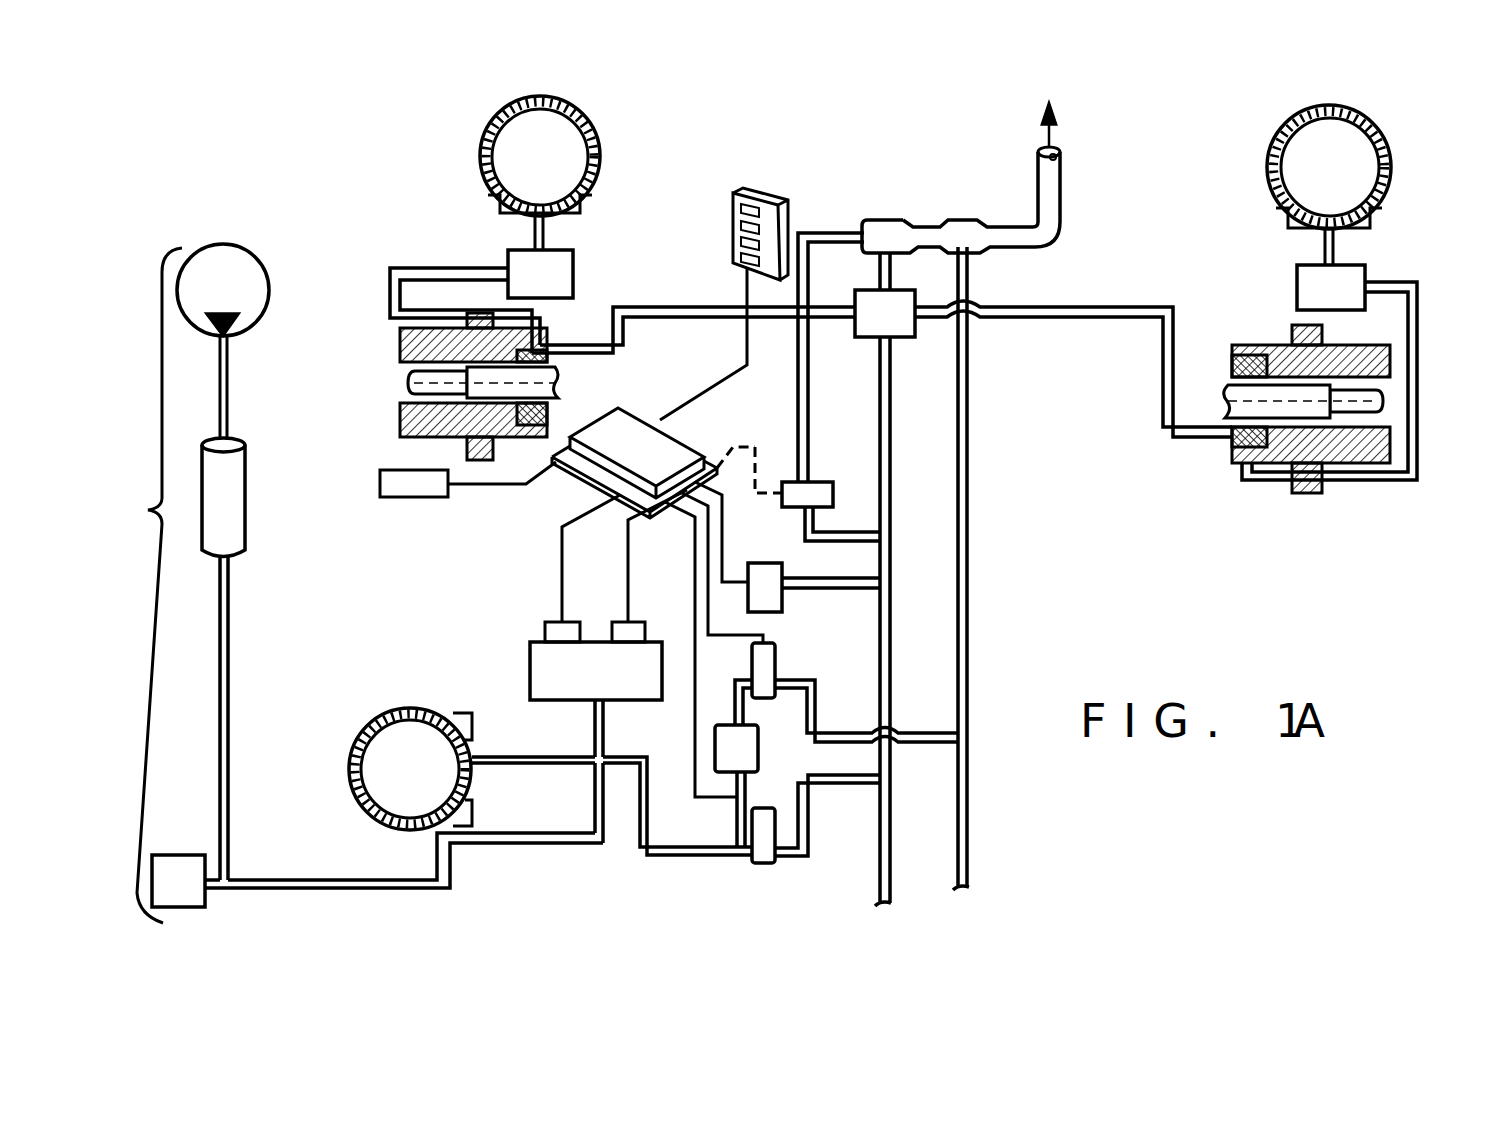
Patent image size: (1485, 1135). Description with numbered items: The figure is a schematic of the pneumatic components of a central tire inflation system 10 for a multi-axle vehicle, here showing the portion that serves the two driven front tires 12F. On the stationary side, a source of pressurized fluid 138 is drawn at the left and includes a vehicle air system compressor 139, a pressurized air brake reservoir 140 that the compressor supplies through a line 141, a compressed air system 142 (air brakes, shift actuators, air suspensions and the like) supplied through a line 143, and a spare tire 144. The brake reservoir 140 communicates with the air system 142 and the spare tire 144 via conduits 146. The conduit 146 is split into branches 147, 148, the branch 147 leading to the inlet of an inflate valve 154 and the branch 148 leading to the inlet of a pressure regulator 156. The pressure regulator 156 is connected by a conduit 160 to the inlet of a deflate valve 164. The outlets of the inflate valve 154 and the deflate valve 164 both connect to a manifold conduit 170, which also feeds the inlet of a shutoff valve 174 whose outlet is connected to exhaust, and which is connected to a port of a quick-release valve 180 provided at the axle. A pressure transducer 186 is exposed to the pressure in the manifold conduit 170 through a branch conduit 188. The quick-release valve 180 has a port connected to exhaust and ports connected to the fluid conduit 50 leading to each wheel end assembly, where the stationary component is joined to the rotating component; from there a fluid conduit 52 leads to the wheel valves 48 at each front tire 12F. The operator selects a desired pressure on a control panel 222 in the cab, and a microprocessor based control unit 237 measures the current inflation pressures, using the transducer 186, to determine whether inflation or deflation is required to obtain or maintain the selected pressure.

The central tire inflation system 10 is at (988, 563).
The driven front tires 12F is at (597, 142).
The wheel valves 48 is at (573, 270).
The fluid conduit 50 is at (677, 307).
The fluid conduit 52 is at (412, 268).
The source of pressurized fluid 138 is at (138, 585).
The vehicle air system compressor 139 is at (263, 270).
The pressurized air brake reservoir 140 is at (247, 478).
The line 141 is at (230, 410).
The compressed air system 142 is at (171, 848).
The line 143 is at (230, 728).
The spare tire 144 is at (402, 708).
The conduits 146 is at (537, 842).
The branch 147 is at (682, 857).
The branch 148 is at (735, 815).
The inflate valve 154 is at (763, 865).
The pressure regulator 156 is at (758, 753).
The conduit 160 is at (744, 712).
The deflate valve 164 is at (777, 660).
The manifold conduit 170 is at (893, 668).
The shutoff valve 174 is at (828, 482).
The quick-release valve 180 is at (851, 337).
The pressure transducer 186 is at (767, 563).
The branch conduit 188 is at (855, 590).
The control panel 222 is at (772, 197).
The control unit 237 is at (604, 412).